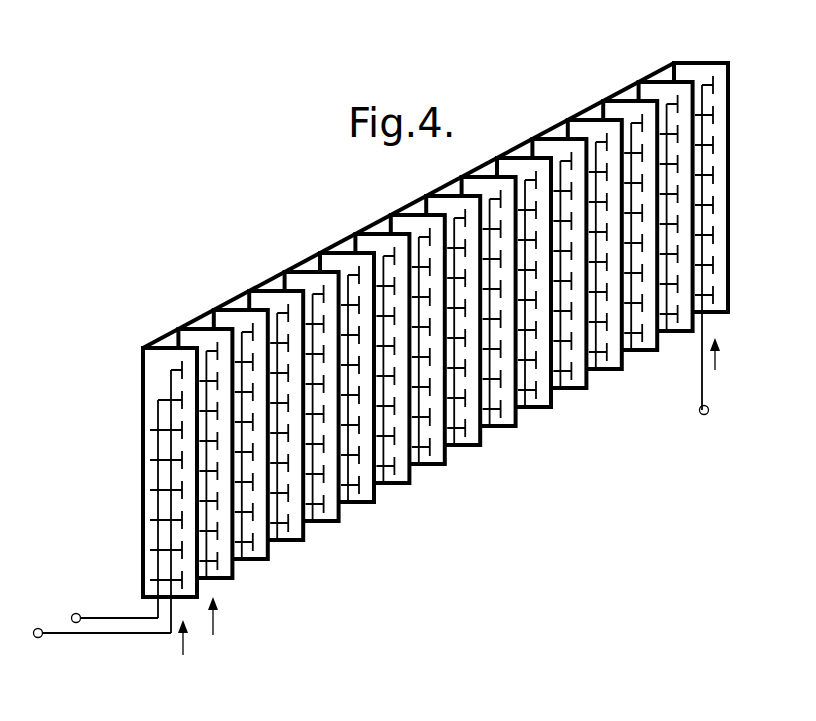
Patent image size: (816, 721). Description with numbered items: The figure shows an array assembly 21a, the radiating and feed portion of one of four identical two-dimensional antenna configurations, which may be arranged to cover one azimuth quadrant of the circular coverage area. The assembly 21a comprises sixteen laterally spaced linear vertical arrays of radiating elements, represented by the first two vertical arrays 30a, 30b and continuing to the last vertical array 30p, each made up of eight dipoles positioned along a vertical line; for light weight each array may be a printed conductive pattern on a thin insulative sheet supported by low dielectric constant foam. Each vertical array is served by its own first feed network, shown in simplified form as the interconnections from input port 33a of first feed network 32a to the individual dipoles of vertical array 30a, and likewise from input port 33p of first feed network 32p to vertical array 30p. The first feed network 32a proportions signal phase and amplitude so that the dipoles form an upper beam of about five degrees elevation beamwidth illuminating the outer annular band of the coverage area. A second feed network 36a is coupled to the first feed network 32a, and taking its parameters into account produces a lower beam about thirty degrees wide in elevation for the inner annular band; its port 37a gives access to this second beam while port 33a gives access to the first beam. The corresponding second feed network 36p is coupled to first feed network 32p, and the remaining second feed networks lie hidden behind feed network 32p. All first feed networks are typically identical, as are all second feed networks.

The array assembly 21a is at (325, 216).
The first feed network 32a is at (168, 385).
The second feed network 36a is at (160, 417).
The port 37a is at (76, 613).
The input port 33a is at (38, 638).
The vertical array 30a is at (182, 653).
The vertical array 30b is at (218, 631).
The first feed network 32p is at (708, 77).
The second feed network 36p is at (698, 15).
The vertical array 30p is at (731, 370).
The input port 33p is at (700, 411).